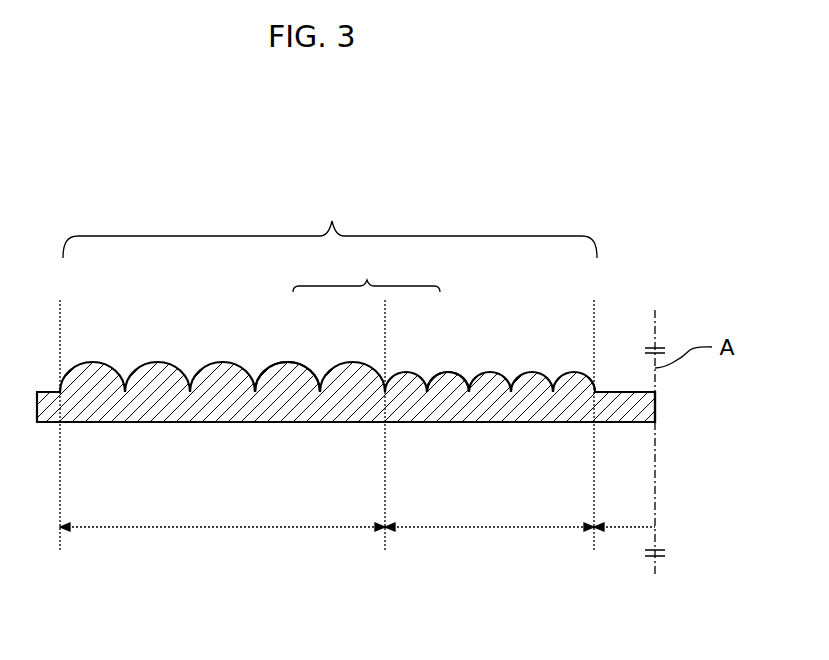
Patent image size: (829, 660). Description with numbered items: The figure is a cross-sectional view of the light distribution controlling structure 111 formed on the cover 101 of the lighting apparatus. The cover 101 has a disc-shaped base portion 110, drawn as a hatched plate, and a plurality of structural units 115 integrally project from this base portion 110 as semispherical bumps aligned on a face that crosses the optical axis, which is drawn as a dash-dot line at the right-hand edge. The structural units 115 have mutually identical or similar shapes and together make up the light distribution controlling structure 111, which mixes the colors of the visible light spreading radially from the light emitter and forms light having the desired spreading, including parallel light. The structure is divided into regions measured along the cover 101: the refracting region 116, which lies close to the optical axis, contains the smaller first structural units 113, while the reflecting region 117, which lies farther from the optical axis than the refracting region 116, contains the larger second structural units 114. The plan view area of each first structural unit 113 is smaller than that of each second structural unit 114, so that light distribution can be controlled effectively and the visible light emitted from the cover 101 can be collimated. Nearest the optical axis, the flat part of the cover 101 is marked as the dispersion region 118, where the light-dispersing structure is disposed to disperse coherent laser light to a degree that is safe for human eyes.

The cover 101 is at (620, 392).
The base portion 110 is at (242, 423).
The light distribution controlling structure 111 is at (328, 373).
The first structural units 113 is at (450, 372).
The second structural units 114 is at (292, 363).
The structural units 115 is at (366, 402).
The refracting region 116 is at (489, 518).
The reflecting region 117 is at (222, 518).
The dispersion region 118 is at (620, 527).